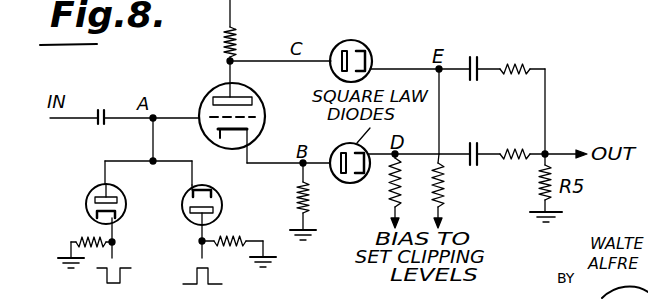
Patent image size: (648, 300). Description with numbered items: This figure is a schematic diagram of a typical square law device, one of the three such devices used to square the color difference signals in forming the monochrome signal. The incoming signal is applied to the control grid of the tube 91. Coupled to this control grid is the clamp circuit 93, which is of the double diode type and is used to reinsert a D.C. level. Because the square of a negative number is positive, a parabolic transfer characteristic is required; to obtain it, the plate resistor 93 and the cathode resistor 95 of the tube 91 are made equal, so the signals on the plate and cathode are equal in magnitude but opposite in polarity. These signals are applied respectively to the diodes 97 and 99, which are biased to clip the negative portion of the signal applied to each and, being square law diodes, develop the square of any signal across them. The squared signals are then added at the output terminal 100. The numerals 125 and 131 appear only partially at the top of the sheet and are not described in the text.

The tube 91 is at (275, 92).
The clamp circuit / plate resistor 93 is at (225, 38).
The cathode resistor 95 is at (298, 200).
The diode 97 is at (369, 46).
The diode 99 is at (349, 183).
The output terminal 100 is at (546, 150).
The lead (partially shown) 125 is at (364, 6).
The lead (partially shown) 131 is at (529, 6).